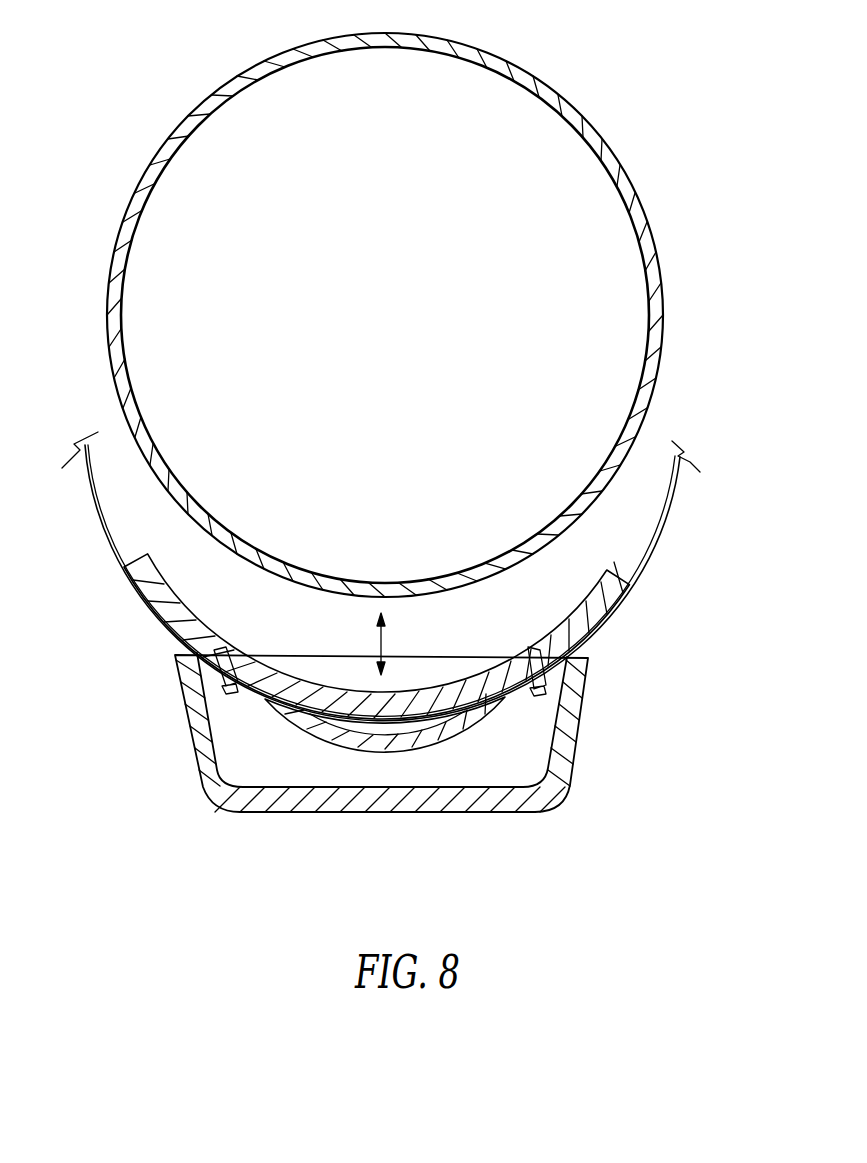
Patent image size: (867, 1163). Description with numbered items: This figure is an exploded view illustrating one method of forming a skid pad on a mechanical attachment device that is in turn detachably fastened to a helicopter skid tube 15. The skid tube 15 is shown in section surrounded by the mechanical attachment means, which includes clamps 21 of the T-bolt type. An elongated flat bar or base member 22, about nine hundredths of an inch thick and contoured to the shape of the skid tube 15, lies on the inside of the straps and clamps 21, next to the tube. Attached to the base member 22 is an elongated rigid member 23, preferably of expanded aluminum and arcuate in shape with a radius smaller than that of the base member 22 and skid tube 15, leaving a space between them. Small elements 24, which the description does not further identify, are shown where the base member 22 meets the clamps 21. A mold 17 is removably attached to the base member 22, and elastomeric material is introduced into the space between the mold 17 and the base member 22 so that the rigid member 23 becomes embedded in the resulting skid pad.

The skid tube 15 is at (143, 385).
The mold 17 is at (496, 806).
The clamps 21 is at (640, 575).
The base member 22 is at (575, 630).
The elongated rigid member 23 is at (327, 734).
The retaining clip 24 is at (543, 680).